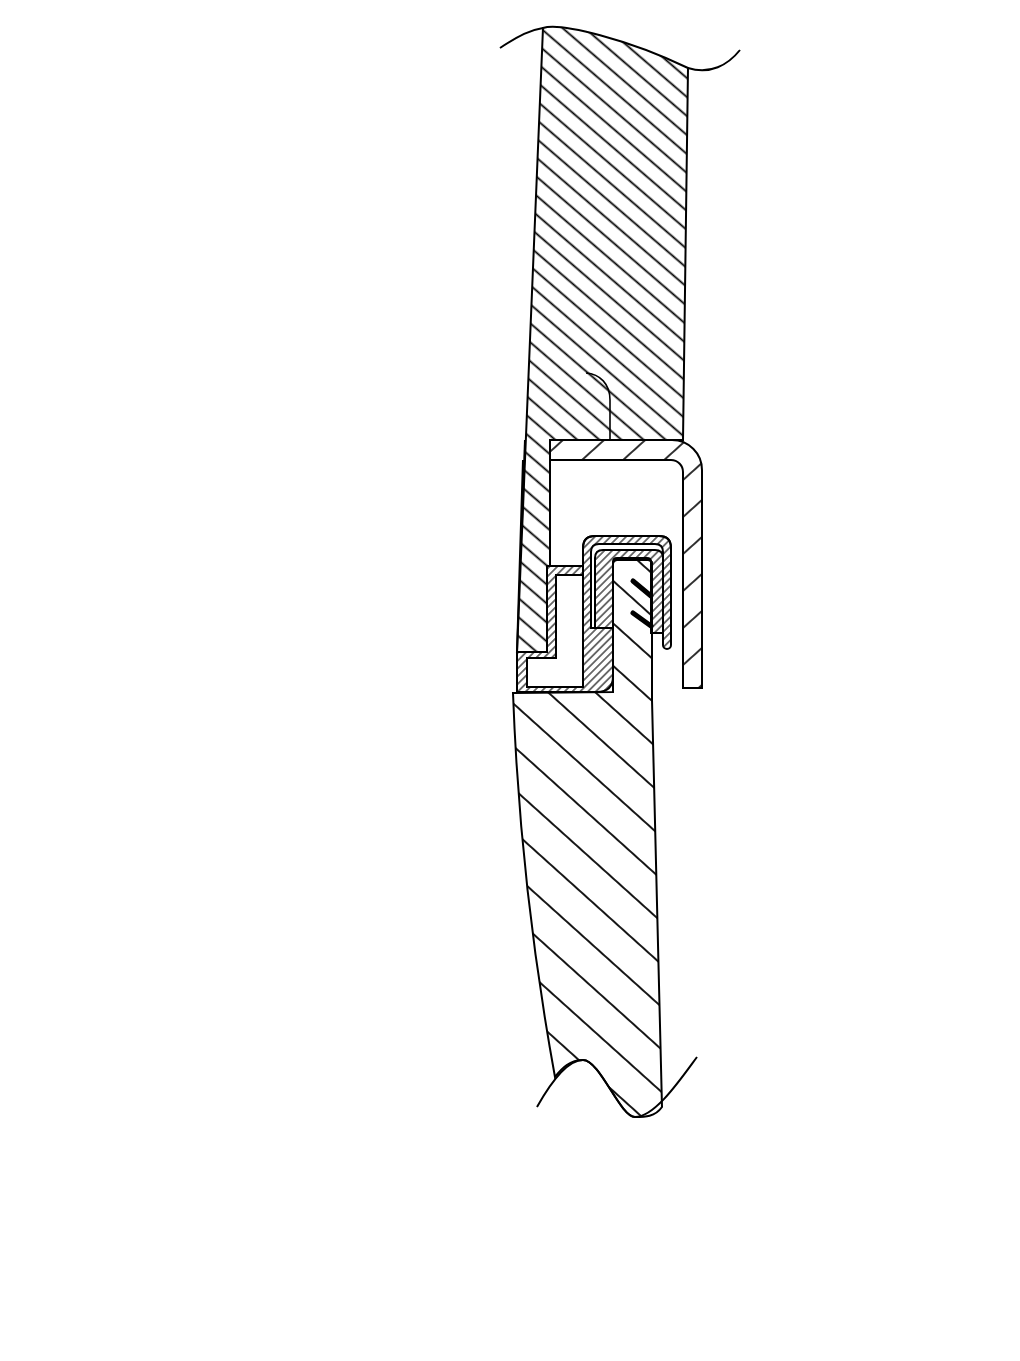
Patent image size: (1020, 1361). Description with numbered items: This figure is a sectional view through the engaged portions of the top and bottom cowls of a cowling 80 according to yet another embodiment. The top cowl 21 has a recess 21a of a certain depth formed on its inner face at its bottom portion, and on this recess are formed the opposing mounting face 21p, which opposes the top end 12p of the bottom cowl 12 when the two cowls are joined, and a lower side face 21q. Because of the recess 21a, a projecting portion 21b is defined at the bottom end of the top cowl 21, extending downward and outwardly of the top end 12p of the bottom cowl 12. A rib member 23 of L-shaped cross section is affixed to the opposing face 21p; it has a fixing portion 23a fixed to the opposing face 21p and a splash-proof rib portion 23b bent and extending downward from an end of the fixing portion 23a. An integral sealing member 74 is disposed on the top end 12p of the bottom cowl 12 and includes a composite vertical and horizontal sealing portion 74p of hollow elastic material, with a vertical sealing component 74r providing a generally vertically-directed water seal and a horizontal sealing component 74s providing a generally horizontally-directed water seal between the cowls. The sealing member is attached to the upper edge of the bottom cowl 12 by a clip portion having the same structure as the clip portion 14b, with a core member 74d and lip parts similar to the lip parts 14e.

The cowling 80 is at (452, 152).
The bottom cowl 12 is at (540, 867).
The top end of the bottom cowl 12p is at (625, 566).
The clip portion 14b is at (660, 628).
The lip parts 14e is at (667, 602).
The top cowl 21 is at (535, 267).
The recess 21a is at (372, 353).
The opposing mounting face 21p is at (586, 373).
The lower side face 21q is at (525, 486).
The projecting portion 21b is at (533, 509).
The rib member 23 is at (722, 484).
The fixing portion 23a is at (647, 453).
The splash-proof rib portion 23b is at (703, 672).
The integral sealing member 74 is at (503, 680).
The core member 74d is at (585, 546).
The composite vertical and horizontal sealing portion 74p is at (372, 587).
The horizontal sealing component 74s is at (546, 582).
The vertical sealing component 74r is at (525, 642).